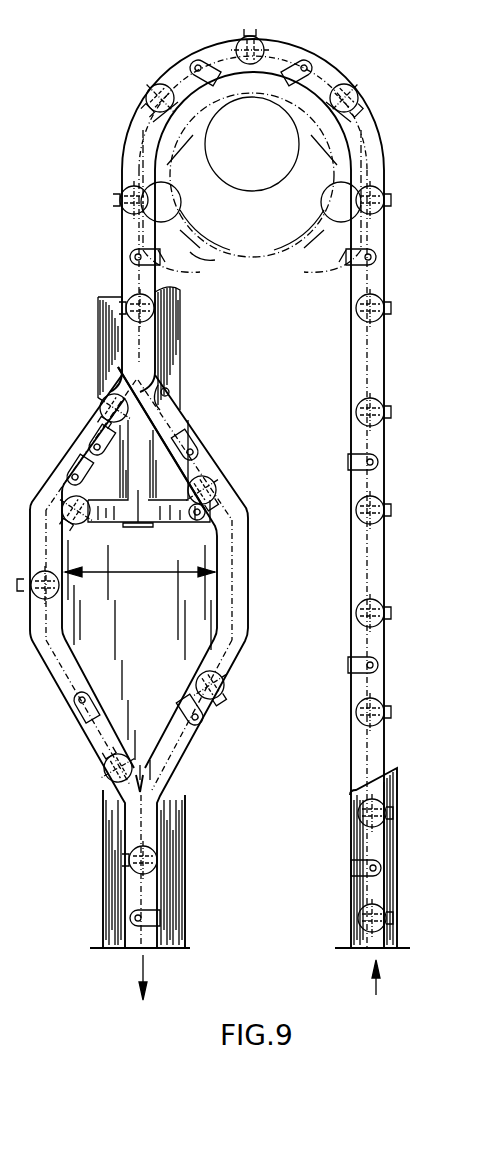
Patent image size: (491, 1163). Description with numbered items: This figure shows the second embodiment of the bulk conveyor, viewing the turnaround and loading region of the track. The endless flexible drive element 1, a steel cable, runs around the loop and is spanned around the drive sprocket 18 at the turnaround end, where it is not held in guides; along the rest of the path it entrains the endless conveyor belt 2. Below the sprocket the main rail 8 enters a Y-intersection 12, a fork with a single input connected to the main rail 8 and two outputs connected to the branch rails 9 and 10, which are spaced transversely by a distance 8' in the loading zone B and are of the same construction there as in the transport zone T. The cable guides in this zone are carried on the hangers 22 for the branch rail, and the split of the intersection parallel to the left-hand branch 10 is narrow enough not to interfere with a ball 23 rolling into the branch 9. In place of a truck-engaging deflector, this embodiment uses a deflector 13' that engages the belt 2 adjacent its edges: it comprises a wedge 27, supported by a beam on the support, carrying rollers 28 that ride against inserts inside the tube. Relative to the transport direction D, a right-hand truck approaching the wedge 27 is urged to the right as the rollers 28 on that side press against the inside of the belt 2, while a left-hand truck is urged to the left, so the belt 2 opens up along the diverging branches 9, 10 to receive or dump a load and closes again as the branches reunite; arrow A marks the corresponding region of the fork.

The endless flexible drive element 1 is at (372, 372).
The conveyor belt 2 is at (178, 848).
The main rail 8 is at (101, 261).
The transverse spacing distance 8' is at (140, 594).
The branch rail 9 is at (27, 555).
The branch rail 10 is at (248, 625).
The Y-intersection 12 is at (158, 374).
The deflector 13' is at (160, 525).
The drive sprocket 18 is at (268, 180).
The hanger 22 is at (358, 670).
The ball 23 is at (383, 700).
The wedge 27 is at (125, 375).
The rollers 28 is at (175, 388).
The direction A is at (202, 412).
The loading zone B is at (253, 551).
The transport direction D is at (109, 152).
The transport zone T is at (97, 910).